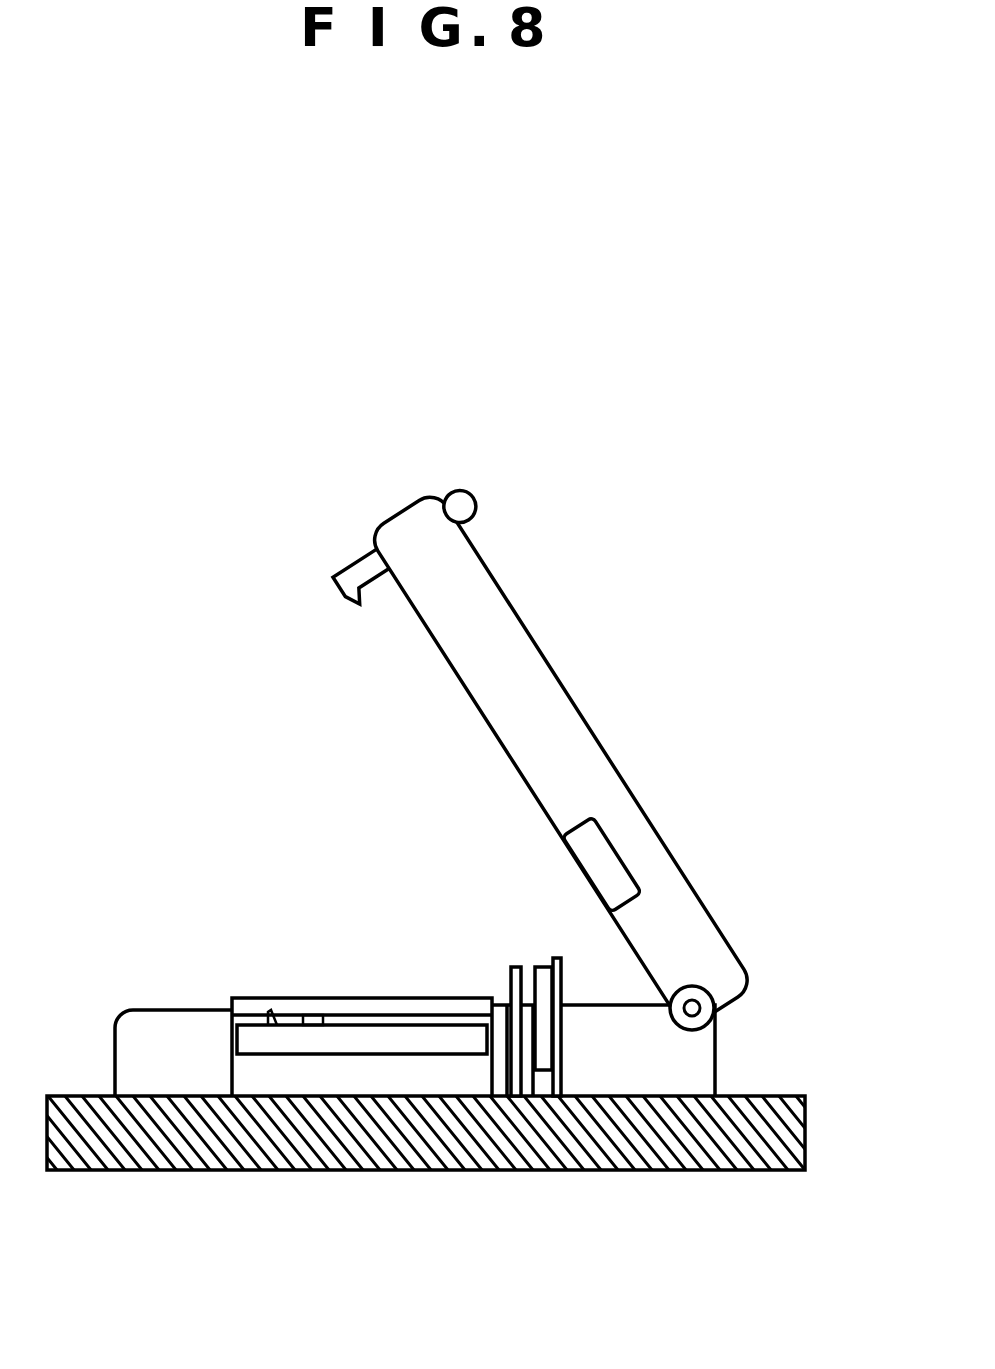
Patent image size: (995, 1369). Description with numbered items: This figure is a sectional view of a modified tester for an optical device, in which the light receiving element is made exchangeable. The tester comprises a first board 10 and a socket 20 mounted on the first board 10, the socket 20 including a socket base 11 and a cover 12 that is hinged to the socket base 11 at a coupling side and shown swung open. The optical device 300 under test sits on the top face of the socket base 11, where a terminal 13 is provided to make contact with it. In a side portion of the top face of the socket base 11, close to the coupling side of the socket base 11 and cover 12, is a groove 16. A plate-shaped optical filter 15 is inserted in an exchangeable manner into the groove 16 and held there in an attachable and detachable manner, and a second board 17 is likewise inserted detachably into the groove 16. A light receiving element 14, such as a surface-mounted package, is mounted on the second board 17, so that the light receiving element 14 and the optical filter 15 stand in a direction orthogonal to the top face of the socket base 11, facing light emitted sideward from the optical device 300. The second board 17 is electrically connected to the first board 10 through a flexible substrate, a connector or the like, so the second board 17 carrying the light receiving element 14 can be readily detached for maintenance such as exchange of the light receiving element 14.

The first board 10 is at (150, 1158).
The socket base 11 is at (170, 1032).
The cover 12 is at (523, 696).
The terminal 13 is at (313, 1015).
The light receiving element 14 is at (543, 1060).
The optical filter 15 is at (515, 1040).
The groove 16 is at (567, 1083).
The second board 17 is at (557, 958).
The socket 20 is at (719, 930).
The optical device 300 is at (388, 997).